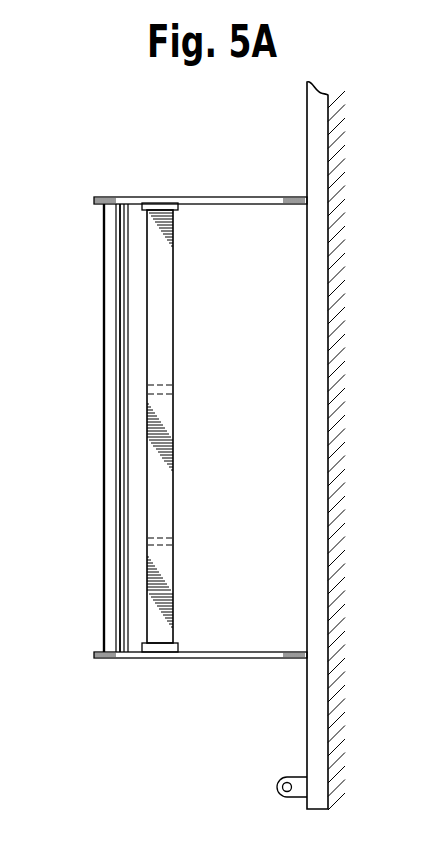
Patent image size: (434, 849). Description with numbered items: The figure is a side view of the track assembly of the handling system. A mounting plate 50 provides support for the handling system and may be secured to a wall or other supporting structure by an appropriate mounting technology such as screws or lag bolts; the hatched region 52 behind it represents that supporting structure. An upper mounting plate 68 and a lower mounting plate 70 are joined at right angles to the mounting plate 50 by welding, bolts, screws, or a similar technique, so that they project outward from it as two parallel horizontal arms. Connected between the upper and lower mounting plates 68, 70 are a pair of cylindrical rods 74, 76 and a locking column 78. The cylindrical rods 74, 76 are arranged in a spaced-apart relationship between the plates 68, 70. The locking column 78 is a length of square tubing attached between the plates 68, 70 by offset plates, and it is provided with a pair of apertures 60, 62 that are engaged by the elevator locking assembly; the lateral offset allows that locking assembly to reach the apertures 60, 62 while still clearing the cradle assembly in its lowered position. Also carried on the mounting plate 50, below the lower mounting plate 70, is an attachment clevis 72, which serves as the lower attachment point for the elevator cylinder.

The mounting plate 50 is at (341, 97).
The mounting wall 52 is at (306, 134).
The aperture 60 is at (174, 391).
The aperture 62 is at (174, 545).
The upper mounting plate 68 is at (196, 197).
The lower mounting plate 70 is at (248, 660).
The attachment clevis 72 is at (277, 787).
The cylindrical rod 74 is at (104, 565).
The cylindrical rod 76 is at (84, 449).
The locking column 78 is at (174, 320).